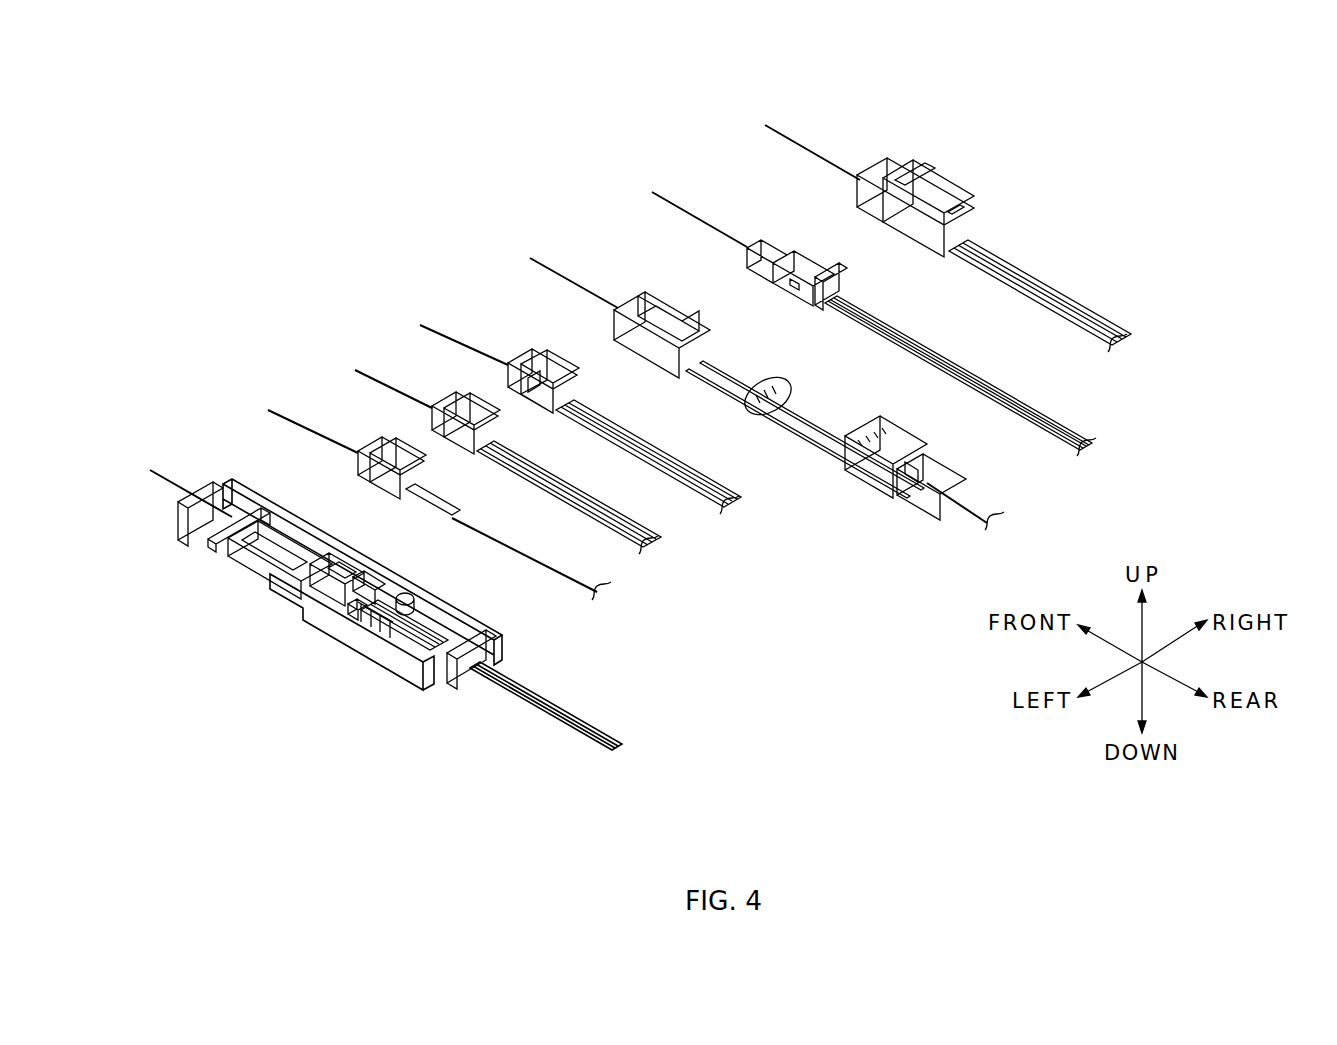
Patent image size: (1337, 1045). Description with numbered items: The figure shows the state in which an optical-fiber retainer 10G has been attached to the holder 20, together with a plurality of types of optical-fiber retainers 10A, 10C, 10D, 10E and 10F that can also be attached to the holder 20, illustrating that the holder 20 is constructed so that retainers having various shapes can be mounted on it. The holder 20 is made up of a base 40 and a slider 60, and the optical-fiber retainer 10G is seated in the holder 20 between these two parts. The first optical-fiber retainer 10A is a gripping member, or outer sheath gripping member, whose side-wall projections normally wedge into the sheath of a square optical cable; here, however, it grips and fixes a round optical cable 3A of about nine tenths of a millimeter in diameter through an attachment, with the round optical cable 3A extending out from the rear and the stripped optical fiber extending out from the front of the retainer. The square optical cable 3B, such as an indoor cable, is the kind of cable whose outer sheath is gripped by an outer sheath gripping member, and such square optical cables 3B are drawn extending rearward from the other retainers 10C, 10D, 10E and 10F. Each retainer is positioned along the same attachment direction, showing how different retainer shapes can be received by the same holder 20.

The first optical-fiber retainer 10A is at (427, 397).
The optical-fiber retainer 10C is at (622, 282).
The optical-fiber retainer 10D is at (512, 345).
The optical-fiber retainer 10E is at (757, 213).
The optical-fiber retainer 10F is at (868, 157).
The optical-fiber retainer 10G is at (258, 563).
The holder 20 is at (336, 608).
The base 40 is at (402, 664).
The slider 60 is at (462, 668).
The round optical cable 3A is at (548, 592).
The square optical cable 3B is at (642, 547).